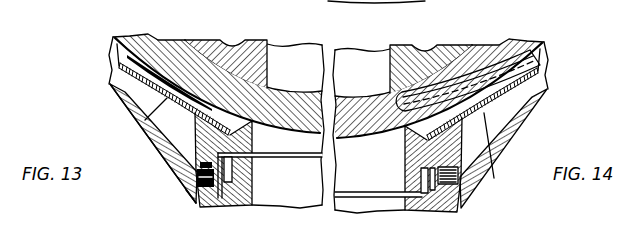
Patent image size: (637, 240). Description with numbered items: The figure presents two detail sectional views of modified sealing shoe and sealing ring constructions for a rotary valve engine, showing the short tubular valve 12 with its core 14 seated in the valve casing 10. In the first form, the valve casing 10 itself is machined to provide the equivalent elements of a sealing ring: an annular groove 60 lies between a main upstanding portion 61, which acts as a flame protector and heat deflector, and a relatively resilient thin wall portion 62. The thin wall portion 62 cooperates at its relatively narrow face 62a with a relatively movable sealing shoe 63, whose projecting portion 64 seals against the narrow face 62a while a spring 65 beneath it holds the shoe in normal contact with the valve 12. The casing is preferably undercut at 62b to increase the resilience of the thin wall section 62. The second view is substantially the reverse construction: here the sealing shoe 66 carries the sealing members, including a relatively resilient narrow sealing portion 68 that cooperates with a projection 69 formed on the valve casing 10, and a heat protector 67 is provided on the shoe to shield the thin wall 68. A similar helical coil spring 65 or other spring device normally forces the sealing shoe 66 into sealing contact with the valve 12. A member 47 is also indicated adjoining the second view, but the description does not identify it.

In FIG. 13, the valve casing 10 is at (158, 163).
In FIG. 14, the valve casing 10 is at (520, 142).
In FIG. 13, the tubular valve 12 is at (293, 92).
In FIG. 14, the tubular valve 12 is at (352, 97).
In FIG. 13, the core 14 is at (206, 41).
In FIG. 14, the core 14 is at (450, 50).
In FIG. 14, the upper member 47 is at (352, 2).
In FIG. 13, the annular groove 60 is at (250, 199).
In FIG. 13, the main upstanding portion 61 is at (247, 166).
In FIG. 13, the thin wall portion 62 is at (247, 186).
In FIG. 13, the narrow face 62a is at (233, 154).
In FIG. 13, the undercut 62b is at (212, 196).
In FIG. 13, the sealing shoe 63 is at (136, 140).
In FIG. 13, the projecting portion 64 is at (184, 190).
In FIG. 13, the spring 65 is at (199, 190).
In FIG. 14, the spring 65 is at (452, 190).
In FIG. 14, the sealing shoe 66 is at (490, 166).
In FIG. 14, the heat protector 67 is at (417, 186).
In FIG. 14, the narrow sealing portion 68 is at (448, 186).
In FIG. 14, the projection 69 is at (430, 164).